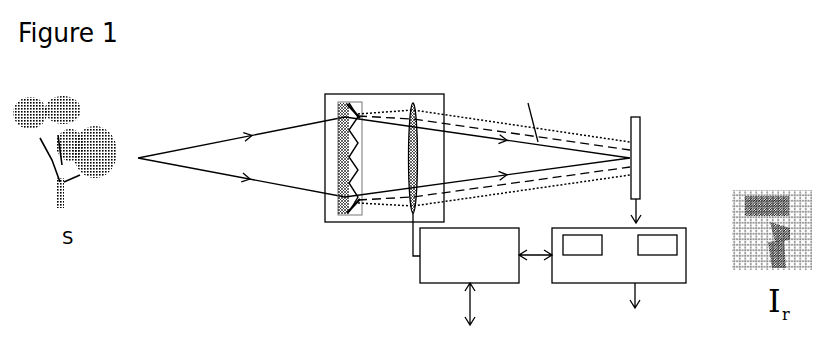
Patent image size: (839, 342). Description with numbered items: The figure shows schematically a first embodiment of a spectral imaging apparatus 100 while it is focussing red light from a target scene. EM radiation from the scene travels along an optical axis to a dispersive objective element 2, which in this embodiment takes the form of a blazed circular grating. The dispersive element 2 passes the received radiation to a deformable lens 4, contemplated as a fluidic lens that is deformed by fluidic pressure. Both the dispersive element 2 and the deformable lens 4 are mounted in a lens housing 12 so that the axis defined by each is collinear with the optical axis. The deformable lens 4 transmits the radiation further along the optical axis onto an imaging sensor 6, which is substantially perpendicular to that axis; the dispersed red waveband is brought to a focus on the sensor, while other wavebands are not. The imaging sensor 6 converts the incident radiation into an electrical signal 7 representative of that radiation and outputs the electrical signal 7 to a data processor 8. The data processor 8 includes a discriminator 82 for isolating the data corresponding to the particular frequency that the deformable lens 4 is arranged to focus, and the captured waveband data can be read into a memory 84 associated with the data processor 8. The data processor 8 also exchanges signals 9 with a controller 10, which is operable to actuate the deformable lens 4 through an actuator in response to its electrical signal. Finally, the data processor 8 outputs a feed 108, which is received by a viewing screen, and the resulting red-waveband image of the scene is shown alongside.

The spectral imaging apparatus 100 is at (415, 165).
The dispersive objective element 2 is at (344, 102).
The deformable lens 4 is at (412, 104).
The lens housing 12 is at (339, 222).
The imaging sensor 6 is at (637, 155).
The electrical signal 7 is at (638, 204).
The signals 9 is at (538, 254).
The controller 10 is at (469, 255).
The data processor 8 is at (619, 255).
The discriminator 82 is at (582, 245).
The memory 84 is at (657, 245).
The feed 108 is at (654, 297).